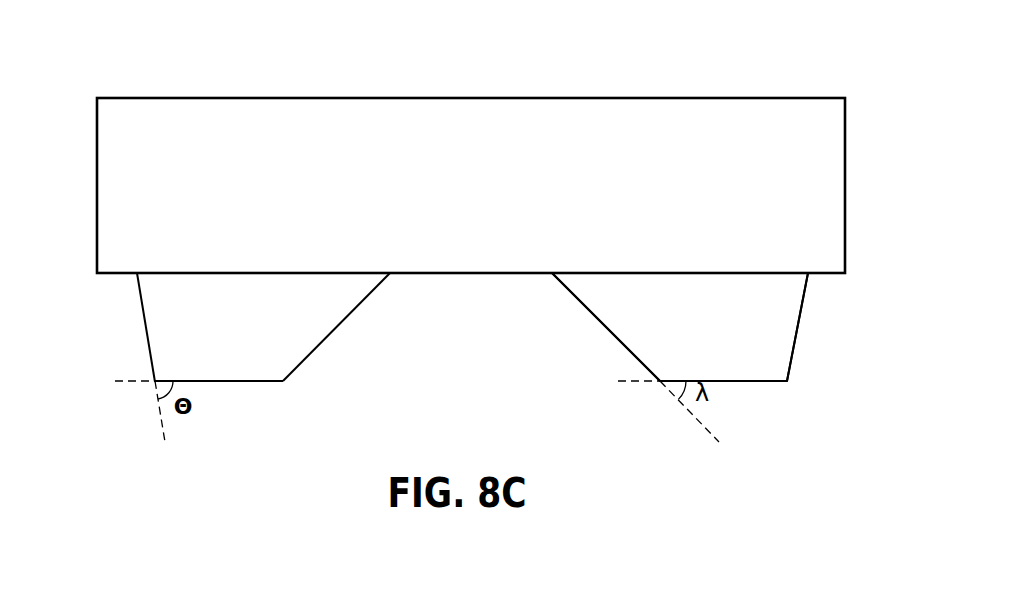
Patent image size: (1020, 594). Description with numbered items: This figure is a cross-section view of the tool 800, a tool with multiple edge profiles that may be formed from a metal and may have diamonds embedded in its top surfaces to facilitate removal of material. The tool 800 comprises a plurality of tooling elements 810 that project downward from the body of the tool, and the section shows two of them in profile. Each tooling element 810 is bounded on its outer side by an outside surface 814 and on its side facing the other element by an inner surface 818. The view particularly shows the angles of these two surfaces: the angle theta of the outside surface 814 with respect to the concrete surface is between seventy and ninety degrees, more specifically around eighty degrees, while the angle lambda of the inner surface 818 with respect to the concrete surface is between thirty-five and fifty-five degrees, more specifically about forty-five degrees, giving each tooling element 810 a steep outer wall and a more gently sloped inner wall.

The tool 800 is at (499, 196).
The tooling element 810 is at (776, 321).
The outside surface 814 is at (152, 323).
The inner surface 818 is at (340, 328).